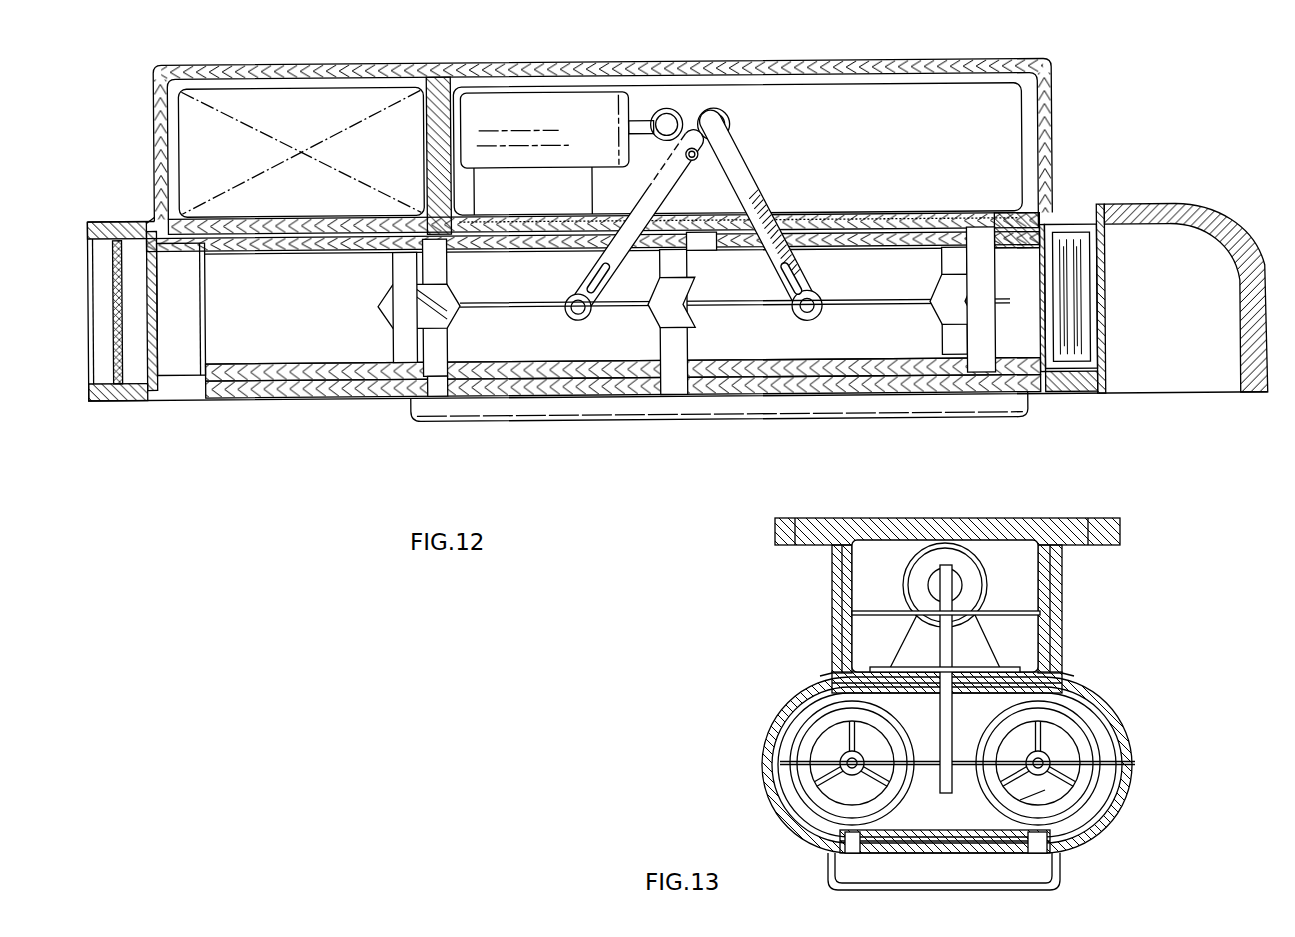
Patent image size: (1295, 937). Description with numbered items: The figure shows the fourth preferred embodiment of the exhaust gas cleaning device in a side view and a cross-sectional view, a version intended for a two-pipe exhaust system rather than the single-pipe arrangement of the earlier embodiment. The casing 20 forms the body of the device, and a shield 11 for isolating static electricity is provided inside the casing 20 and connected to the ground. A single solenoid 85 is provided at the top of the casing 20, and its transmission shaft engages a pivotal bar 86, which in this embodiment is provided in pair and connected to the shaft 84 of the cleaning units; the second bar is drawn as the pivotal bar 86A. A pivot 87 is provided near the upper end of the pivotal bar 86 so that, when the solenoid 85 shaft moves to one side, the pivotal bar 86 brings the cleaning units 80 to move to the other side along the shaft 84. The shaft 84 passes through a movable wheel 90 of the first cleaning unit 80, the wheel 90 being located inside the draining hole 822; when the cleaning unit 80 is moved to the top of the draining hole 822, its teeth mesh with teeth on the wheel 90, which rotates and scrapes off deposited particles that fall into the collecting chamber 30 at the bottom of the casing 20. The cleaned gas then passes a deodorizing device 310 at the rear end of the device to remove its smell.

In FIG. 12, the shield 11 is at (1040, 145).
In FIG. 13, the shield 11 is at (1053, 575).
In FIG. 12, the casing 20 is at (1063, 181).
In FIG. 12, the collecting chamber 30 is at (762, 422).
In FIG. 13, the collecting chamber 30 is at (1060, 877).
In FIG. 12, the cleaning unit 80 is at (445, 350).
In FIG. 13, the cleaning unit 80 is at (812, 731).
In FIG. 12, the shaft 84 is at (881, 300).
In FIG. 13, the shaft 84 is at (840, 765).
In FIG. 12, the solenoid 85 is at (521, 107).
In FIG. 13, the solenoid 85 is at (941, 558).
In FIG. 12, the pivotal bar 86 is at (733, 197).
In FIG. 13, the pivotal bar 86 is at (950, 662).
In FIG. 13, the link arm 86A is at (1045, 792).
In FIG. 12, the pivot 87 is at (701, 155).
In FIG. 13, the pivot 87 is at (1004, 613).
In FIG. 12, the movable wheel 90 is at (403, 347).
In FIG. 12, the deodorizing device 310 is at (1075, 352).
In FIG. 12, the draining hole 822 is at (440, 390).